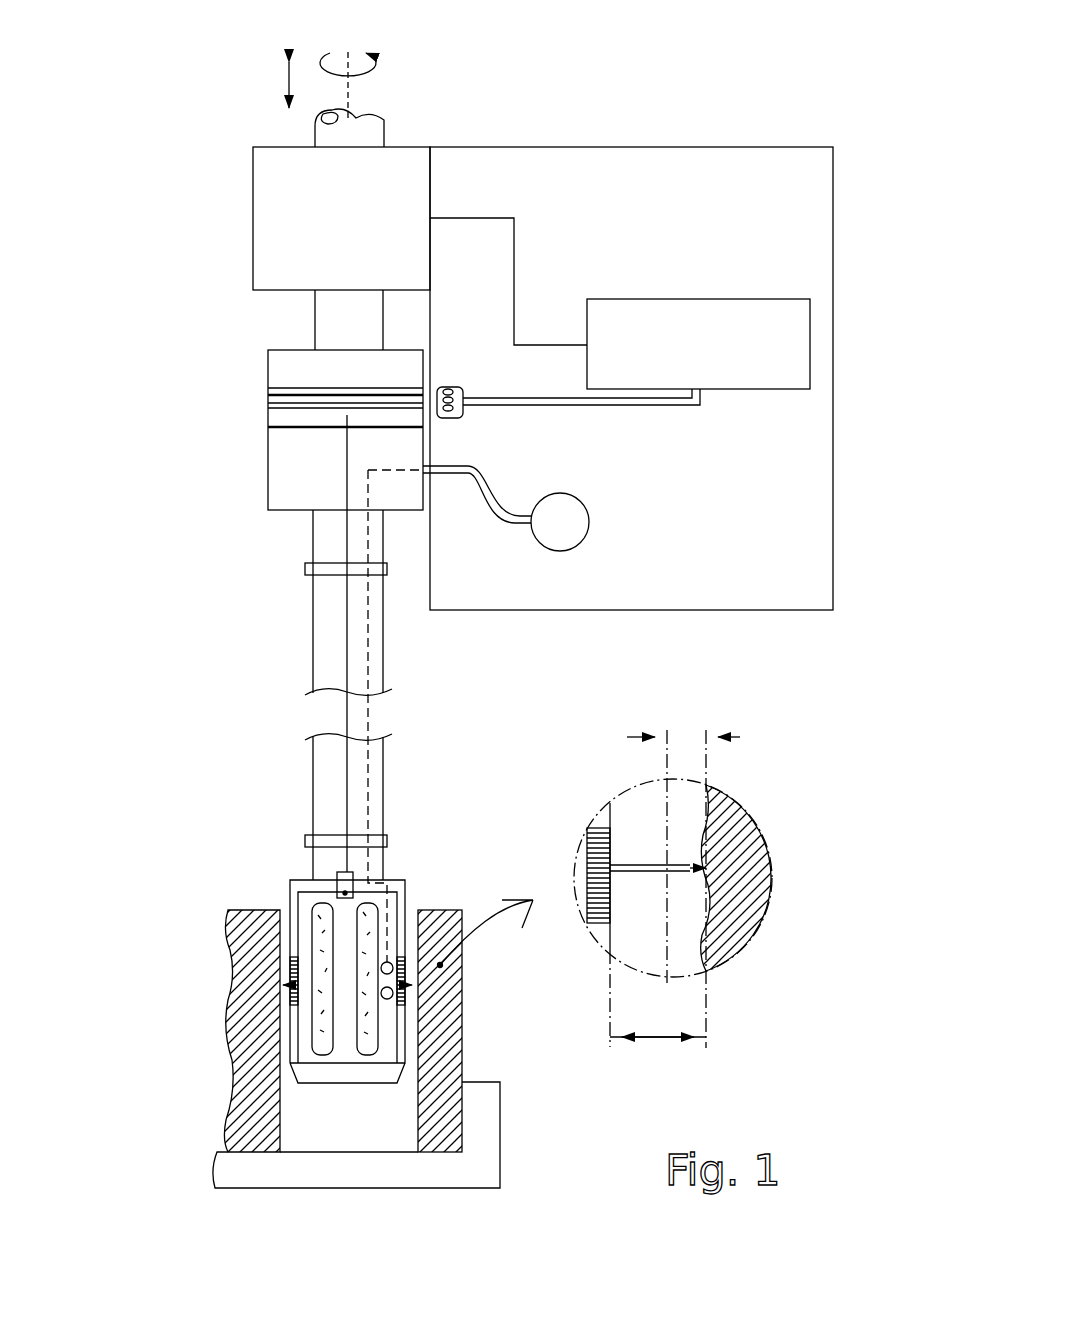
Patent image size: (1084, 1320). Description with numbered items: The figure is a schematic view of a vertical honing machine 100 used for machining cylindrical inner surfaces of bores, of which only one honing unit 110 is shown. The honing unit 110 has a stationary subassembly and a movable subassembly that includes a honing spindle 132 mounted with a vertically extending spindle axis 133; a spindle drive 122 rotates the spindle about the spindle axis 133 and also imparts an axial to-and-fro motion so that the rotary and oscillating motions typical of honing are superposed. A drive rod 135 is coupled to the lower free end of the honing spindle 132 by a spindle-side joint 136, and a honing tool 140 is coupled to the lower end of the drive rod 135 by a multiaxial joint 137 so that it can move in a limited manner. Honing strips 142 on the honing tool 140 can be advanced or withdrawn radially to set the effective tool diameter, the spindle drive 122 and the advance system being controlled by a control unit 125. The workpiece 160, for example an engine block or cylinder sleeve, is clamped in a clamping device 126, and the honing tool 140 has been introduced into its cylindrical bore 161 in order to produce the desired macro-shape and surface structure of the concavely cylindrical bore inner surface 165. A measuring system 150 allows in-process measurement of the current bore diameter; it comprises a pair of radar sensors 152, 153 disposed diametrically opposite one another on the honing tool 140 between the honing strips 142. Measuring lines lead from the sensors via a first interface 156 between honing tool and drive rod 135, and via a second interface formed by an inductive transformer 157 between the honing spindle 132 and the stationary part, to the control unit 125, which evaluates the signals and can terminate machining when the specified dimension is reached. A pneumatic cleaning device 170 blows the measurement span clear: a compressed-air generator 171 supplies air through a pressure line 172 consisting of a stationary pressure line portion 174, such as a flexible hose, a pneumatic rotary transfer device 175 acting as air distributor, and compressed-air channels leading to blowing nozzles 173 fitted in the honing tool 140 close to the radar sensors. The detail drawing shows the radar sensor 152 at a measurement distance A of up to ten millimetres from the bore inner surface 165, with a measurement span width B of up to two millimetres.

The honing machine 100 is at (797, 86).
The honing unit 110 is at (224, 110).
The spindle axis 133 is at (358, 95).
The spindle drive 122 is at (265, 208).
The control unit 125 is at (631, 378).
The honing spindle 132 is at (330, 318).
The pneumatic rotary transfer device 175 is at (262, 476).
The inductive transformer 157 is at (442, 376).
The stationary pressure line portion 174 is at (478, 462).
The compressed-air generator 171 is at (590, 520).
The pneumatic cleaning device 170 is at (594, 561).
The spindle-side joint 136 is at (305, 569).
The drive rod 135 is at (320, 642).
The pressure line 172 is at (372, 660).
The multiaxial joint 137 is at (305, 836).
The honing tool 140 is at (266, 880).
The first interface 156 is at (353, 876).
The radar sensor 153 is at (290, 968).
The radar sensor 152 is at (394, 994).
The blowing nozzles 173 is at (407, 991).
The honing strips 142 is at (360, 1054).
The workpiece 160 is at (256, 1137).
The bore 161 is at (305, 1127).
The bore inner surface 165 is at (407, 1120).
The clamping device 126 is at (490, 1177).
The measuring system 150 is at (480, 815).